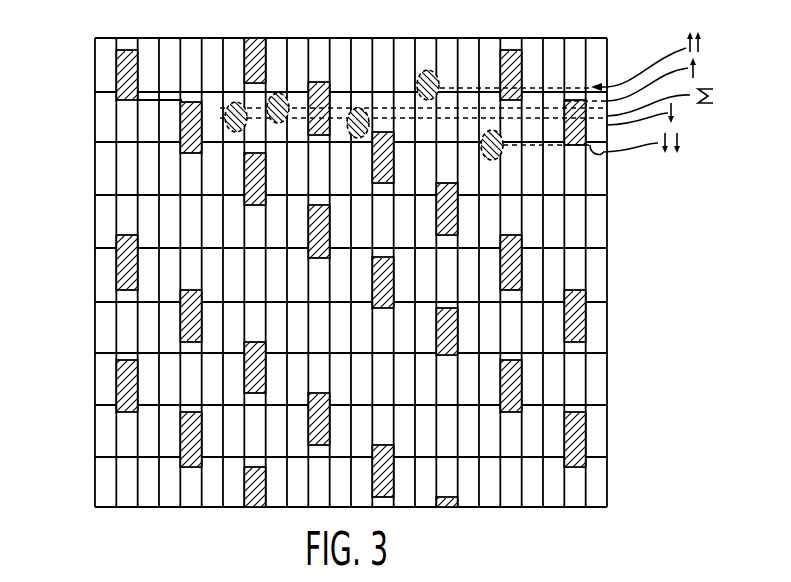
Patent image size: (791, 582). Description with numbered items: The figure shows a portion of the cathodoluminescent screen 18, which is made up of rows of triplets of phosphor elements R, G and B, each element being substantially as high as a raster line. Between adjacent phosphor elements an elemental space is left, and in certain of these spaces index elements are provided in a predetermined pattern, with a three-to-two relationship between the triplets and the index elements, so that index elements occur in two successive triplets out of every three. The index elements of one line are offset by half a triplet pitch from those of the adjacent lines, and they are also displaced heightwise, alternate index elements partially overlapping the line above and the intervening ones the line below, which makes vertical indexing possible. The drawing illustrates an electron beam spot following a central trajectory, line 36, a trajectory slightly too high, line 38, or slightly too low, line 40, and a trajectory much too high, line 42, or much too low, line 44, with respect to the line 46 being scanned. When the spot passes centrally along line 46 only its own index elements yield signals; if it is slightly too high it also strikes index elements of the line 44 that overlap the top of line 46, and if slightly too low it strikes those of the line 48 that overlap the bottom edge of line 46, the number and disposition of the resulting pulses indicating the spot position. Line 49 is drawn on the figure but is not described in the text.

The screen 18 is at (320, 295).
The central trajectory line 36 is at (233, 103).
The slightly too high trajectory line 38 is at (279, 93).
The slightly too low trajectory line 40 is at (362, 108).
The much too high trajectory line 42 is at (429, 70).
The much too low trajectory line 44 is at (503, 152).
The line 46 is at (95, 120).
The line 48 is at (95, 82).
The row of picture elements 49 is at (95, 173).